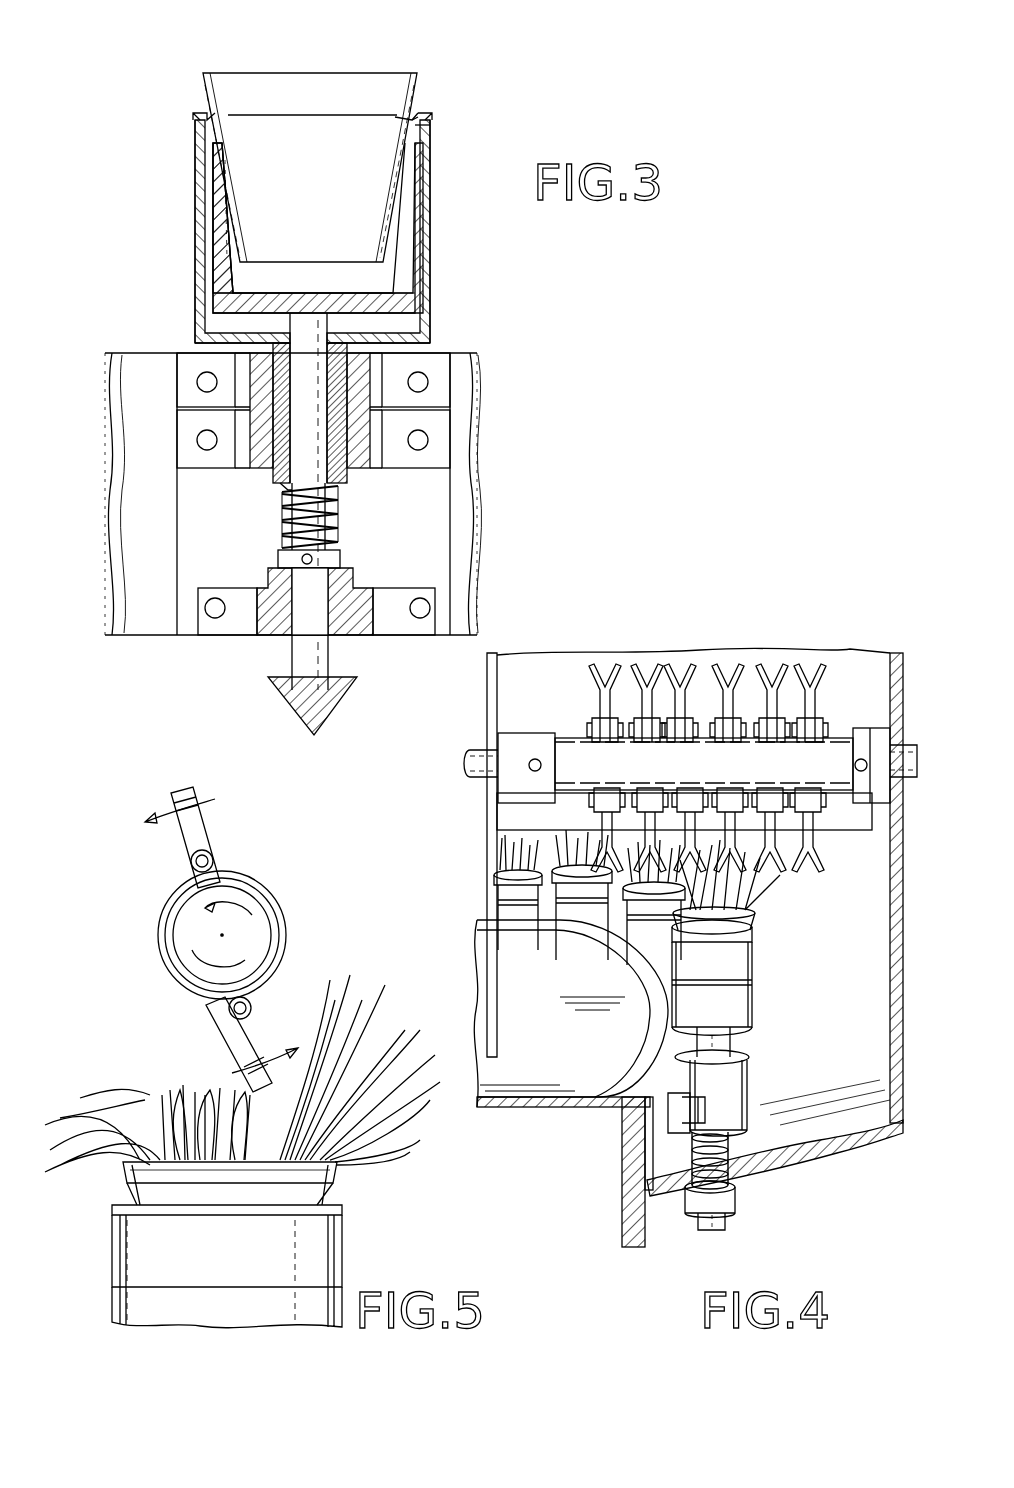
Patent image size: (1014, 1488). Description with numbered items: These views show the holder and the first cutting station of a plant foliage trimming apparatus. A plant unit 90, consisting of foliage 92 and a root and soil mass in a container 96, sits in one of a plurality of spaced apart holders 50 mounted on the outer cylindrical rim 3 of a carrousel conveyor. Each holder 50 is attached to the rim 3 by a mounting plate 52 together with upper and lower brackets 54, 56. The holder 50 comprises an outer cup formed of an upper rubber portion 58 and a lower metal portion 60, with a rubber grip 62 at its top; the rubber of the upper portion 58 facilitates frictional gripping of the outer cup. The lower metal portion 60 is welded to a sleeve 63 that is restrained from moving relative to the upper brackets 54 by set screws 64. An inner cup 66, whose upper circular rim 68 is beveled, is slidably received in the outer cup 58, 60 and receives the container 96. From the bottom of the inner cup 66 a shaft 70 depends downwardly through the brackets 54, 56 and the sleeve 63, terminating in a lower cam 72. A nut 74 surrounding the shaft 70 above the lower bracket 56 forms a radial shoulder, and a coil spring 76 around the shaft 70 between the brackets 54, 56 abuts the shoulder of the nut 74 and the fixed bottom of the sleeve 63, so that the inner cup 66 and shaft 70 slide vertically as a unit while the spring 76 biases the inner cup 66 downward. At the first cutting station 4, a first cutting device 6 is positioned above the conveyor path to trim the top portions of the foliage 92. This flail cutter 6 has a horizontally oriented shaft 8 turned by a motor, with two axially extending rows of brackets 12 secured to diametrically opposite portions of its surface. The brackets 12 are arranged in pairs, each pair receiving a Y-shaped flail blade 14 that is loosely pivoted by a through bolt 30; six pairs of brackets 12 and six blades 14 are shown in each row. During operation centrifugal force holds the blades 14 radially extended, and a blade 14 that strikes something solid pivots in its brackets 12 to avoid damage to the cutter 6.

In FIG. 3, the outer cylindrical rim 3 is at (126, 568).
In FIG. 4, the outer cylindrical rim 3 is at (640, 1015).
In FIG. 4, the first cutting station 4 is at (826, 627).
In FIG. 4, the first cutting device 6 is at (836, 695).
In FIG. 5, the first cutting device 6 is at (276, 875).
In FIG. 4, the shaft 8 is at (565, 738).
In FIG. 5, the shaft 8 is at (262, 930).
In FIG. 4, the brackets 12 is at (615, 745).
In FIG. 5, the brackets 12 is at (192, 866).
In FIG. 4, the Y-shaped flail blade 14 is at (688, 672).
In FIG. 5, the Y-shaped flail blade 14 is at (200, 830).
In FIG. 4, the through bolts 30 is at (600, 805).
In FIG. 3, the holder 50 is at (475, 300).
In FIG. 4, the holder 50 is at (762, 1010).
In FIG. 3, the mounting plate 52 is at (448, 520).
In FIG. 4, the mounting plate 52 is at (650, 1160).
In FIG. 3, the upper brackets 54 is at (440, 412).
In FIG. 4, the upper brackets 54 is at (747, 1098).
In FIG. 3, the lower bracket 56 is at (440, 600).
In FIG. 3, the upper rubber portion 58 is at (195, 165).
In FIG. 4, the upper rubber portion 58 is at (752, 970).
In FIG. 5, the upper rubber portion 58 is at (200, 1254).
In FIG. 3, the lower metal portion 60 is at (197, 268).
In FIG. 4, the lower metal portion 60 is at (750, 1000).
In FIG. 5, the lower metal portion 60 is at (204, 1322).
In FIG. 3, the rubber grip 62 is at (410, 115).
In FIG. 4, the rubber grip 62 is at (752, 932).
In FIG. 5, the rubber grip 62 is at (342, 1210).
In FIG. 3, the sleeve 63 is at (278, 480).
In FIG. 4, the set screws 64 is at (747, 1105).
In FIG. 3, the inner cup 66 is at (402, 260).
In FIG. 3, the upper circular rim 68 is at (430, 132).
In FIG. 3, the shaft 70 is at (292, 412).
In FIG. 4, the shaft 70 is at (720, 1230).
In FIG. 3, the lower cam 72 is at (340, 705).
In FIG. 3, the nut 74 is at (340, 556).
In FIG. 4, the nut 74 is at (735, 1202).
In FIG. 3, the coil spring 76 is at (280, 508).
In FIG. 4, the coil spring 76 is at (735, 1165).
In FIG. 4, the plant unit 90 is at (495, 870).
In FIG. 5, the foliage 92 is at (72, 1110).
In FIG. 3, the container 96 is at (355, 73).
In FIG. 4, the container 96 is at (714, 918).
In FIG. 5, the container 96 is at (330, 1190).